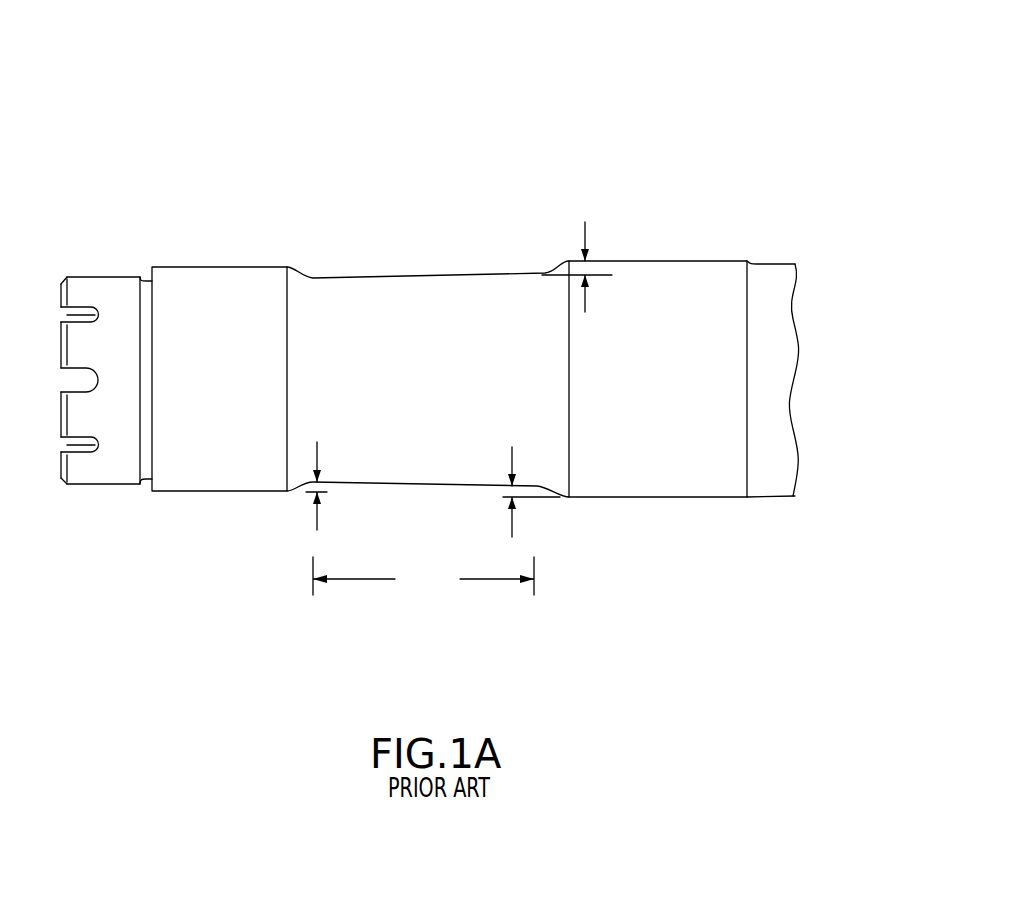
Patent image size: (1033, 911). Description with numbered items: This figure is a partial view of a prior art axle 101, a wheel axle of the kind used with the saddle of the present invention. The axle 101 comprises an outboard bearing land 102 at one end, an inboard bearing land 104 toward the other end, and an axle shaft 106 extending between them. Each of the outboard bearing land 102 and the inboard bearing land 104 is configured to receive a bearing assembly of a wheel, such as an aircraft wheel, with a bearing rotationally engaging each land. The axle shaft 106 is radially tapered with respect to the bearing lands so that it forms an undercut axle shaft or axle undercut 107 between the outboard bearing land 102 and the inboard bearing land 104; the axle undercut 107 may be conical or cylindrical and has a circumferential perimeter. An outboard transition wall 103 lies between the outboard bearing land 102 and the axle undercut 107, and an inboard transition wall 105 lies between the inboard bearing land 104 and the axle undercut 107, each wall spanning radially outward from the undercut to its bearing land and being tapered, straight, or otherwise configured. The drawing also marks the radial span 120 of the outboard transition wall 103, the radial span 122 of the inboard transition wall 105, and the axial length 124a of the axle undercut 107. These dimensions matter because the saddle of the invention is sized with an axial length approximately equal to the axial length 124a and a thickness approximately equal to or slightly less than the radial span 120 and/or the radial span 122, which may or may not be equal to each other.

The axle 101 is at (657, 82).
The outboard bearing land 102 is at (227, 265).
The outboard transition wall 103 is at (298, 268).
The inboard bearing land 104 is at (710, 260).
The inboard transition wall 105 is at (557, 260).
The axle shaft 106 is at (412, 225).
The axle undercut 107 is at (463, 273).
The radial span 120 is at (318, 485).
The radial span 122 is at (588, 268).
The axial length 124a is at (423, 576).